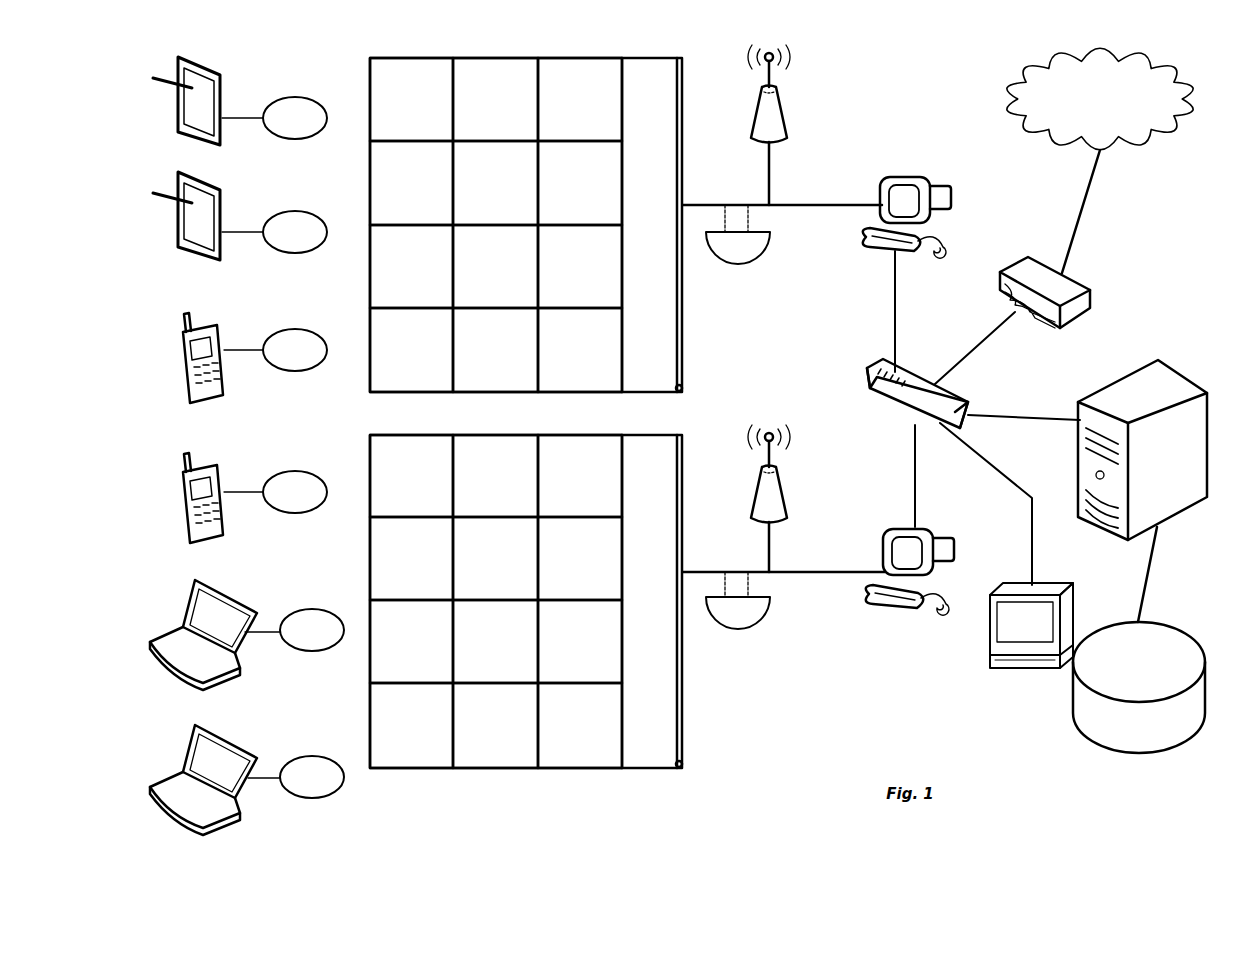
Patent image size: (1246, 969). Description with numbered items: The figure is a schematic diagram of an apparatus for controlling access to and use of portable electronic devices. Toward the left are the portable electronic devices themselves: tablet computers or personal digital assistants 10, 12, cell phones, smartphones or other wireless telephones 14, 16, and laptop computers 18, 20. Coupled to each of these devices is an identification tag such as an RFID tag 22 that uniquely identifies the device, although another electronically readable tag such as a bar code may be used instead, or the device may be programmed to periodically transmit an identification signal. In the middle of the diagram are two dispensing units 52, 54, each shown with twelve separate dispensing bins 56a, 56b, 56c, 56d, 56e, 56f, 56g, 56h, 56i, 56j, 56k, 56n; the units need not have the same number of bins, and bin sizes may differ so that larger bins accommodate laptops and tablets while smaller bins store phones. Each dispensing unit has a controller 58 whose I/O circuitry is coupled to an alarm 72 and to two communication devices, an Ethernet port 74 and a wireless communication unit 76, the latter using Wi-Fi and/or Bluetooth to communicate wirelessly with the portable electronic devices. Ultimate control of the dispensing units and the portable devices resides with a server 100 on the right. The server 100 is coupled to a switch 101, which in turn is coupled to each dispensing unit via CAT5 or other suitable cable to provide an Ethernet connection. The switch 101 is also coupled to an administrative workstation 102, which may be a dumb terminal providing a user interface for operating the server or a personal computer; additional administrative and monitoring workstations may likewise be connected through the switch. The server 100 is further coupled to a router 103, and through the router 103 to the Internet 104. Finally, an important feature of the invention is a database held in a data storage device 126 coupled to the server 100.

The tablet computer 10 is at (220, 80).
The tablet computer 12 is at (222, 207).
The cell phone 14 is at (205, 333).
The cell phone 16 is at (210, 471).
The laptop computer 18 is at (225, 587).
The laptop computer 20 is at (225, 732).
The RFID tag 22 is at (283, 447).
The dispensing unit 52 is at (693, 298).
The dispensing unit 54 is at (693, 683).
The dispensing bin 56a is at (411, 287).
The dispensing bin 56b is at (495, 287).
The dispensing bin 56c is at (580, 287).
The dispensing bin 56d is at (411, 370).
The dispensing bin 56e is at (495, 370).
The dispensing bin 56f is at (580, 370).
The dispensing bin 56g is at (411, 454).
The dispensing bin 56h is at (495, 454).
The dispensing bin 56i is at (580, 454).
The dispensing bin 56j is at (411, 538).
The dispensing bin 56k is at (495, 538).
The dispensing bin 56n is at (580, 538).
The controller 58 is at (965, 718).
The alarm 72 is at (815, 680).
The Ethernet port 74 is at (717, 527).
The wireless communication unit 76 is at (822, 472).
The server 100 is at (1142, 491).
The switch 101 is at (865, 376).
The administrative workstation 102 is at (1025, 622).
The router 103 is at (1075, 280).
The Internet 104 is at (1100, 99).
The data storage device 126 is at (1139, 687).